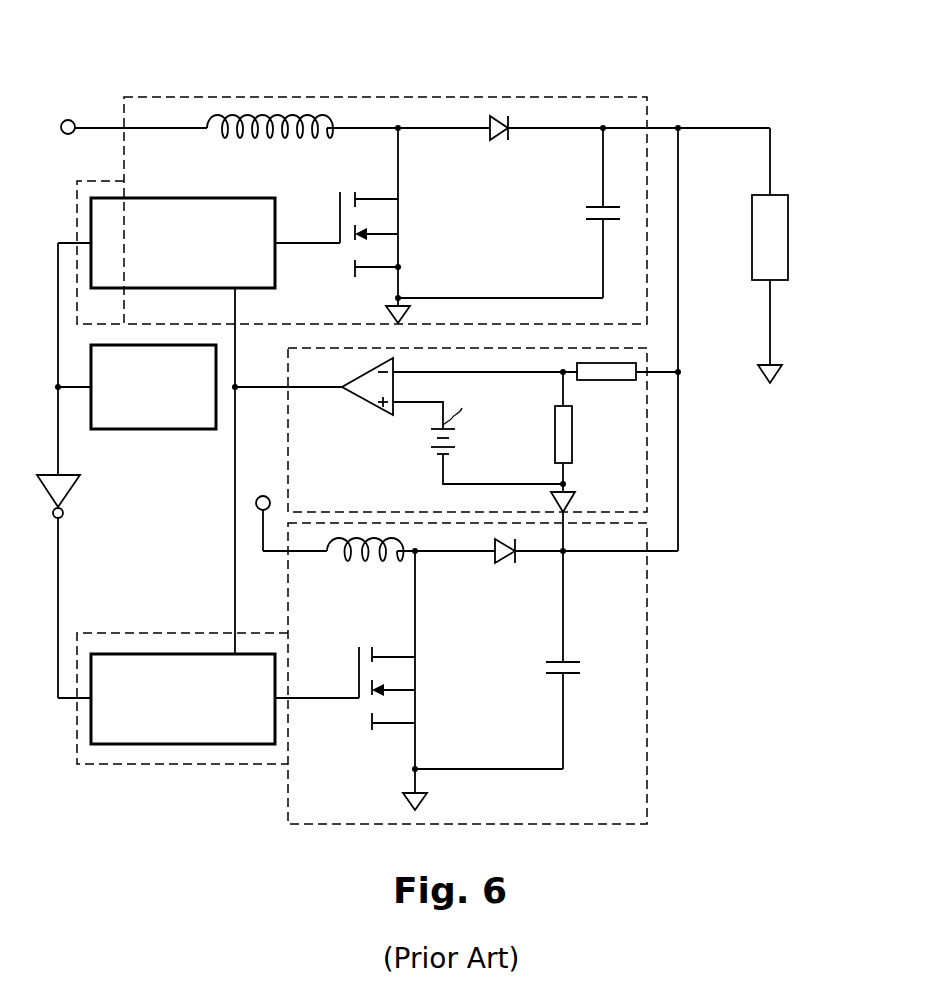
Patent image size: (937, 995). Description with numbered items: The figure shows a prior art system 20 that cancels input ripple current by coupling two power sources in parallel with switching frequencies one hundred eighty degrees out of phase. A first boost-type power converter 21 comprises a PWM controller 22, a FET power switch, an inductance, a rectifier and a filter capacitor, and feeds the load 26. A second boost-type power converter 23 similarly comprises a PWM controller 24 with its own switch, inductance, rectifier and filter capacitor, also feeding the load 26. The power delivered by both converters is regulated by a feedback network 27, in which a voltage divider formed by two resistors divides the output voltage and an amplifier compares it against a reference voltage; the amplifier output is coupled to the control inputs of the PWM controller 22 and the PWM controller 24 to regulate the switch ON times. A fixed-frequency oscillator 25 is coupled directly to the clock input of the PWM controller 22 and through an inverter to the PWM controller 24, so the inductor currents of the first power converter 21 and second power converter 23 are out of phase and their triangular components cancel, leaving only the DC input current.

The prior art system 20 is at (139, 41).
The first boost-type power converter 21 is at (467, 97).
The PWM controller 22 is at (276, 218).
The second boost-type power converter 23 is at (646, 642).
The PWM controller 24 is at (276, 672).
The fixed-frequency oscillator 25 is at (145, 429).
The load 26 is at (788, 237).
The feedback network 27 is at (646, 447).